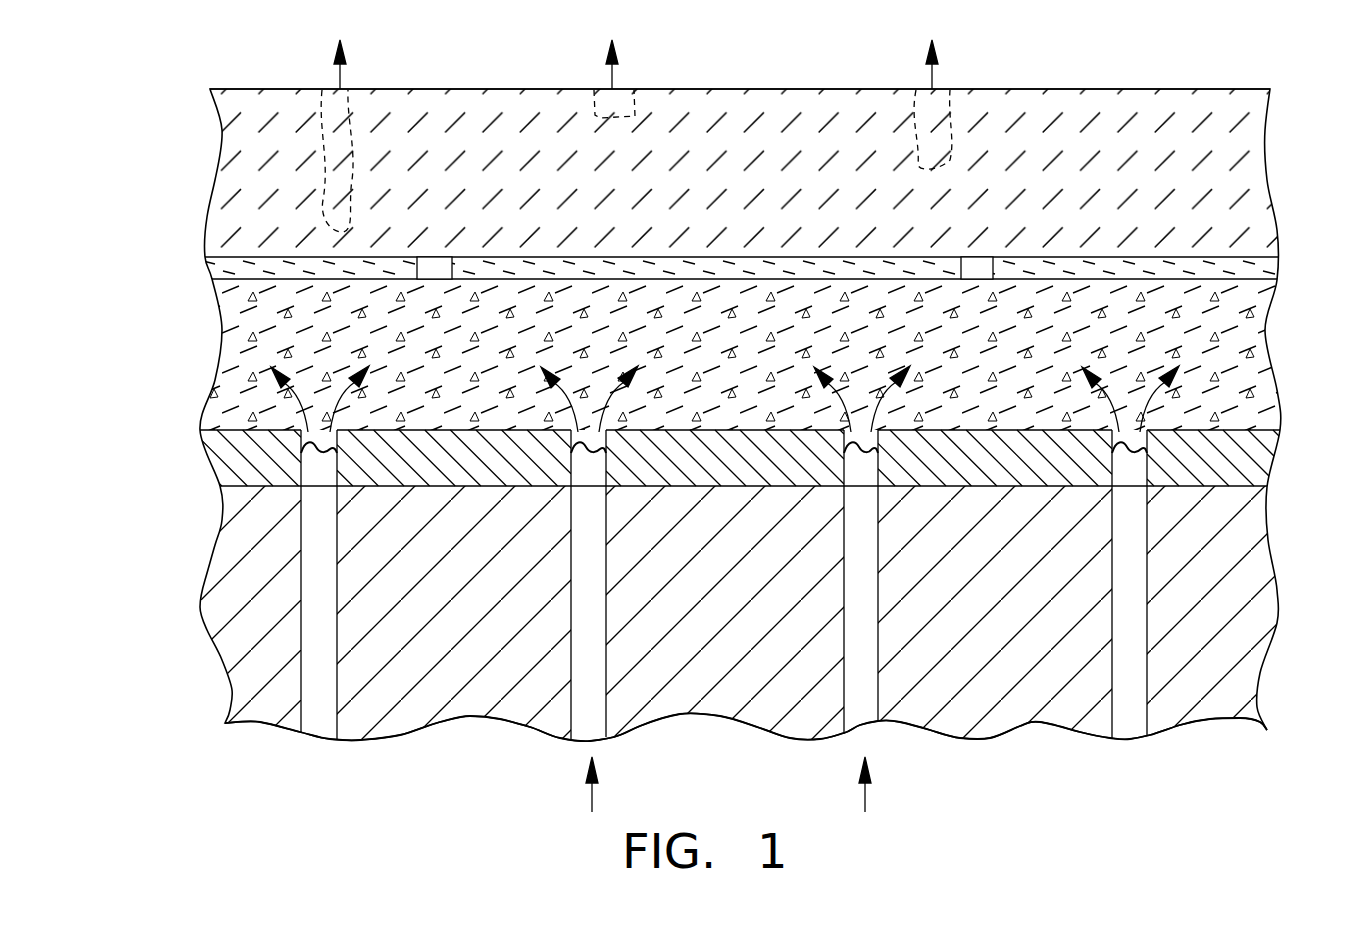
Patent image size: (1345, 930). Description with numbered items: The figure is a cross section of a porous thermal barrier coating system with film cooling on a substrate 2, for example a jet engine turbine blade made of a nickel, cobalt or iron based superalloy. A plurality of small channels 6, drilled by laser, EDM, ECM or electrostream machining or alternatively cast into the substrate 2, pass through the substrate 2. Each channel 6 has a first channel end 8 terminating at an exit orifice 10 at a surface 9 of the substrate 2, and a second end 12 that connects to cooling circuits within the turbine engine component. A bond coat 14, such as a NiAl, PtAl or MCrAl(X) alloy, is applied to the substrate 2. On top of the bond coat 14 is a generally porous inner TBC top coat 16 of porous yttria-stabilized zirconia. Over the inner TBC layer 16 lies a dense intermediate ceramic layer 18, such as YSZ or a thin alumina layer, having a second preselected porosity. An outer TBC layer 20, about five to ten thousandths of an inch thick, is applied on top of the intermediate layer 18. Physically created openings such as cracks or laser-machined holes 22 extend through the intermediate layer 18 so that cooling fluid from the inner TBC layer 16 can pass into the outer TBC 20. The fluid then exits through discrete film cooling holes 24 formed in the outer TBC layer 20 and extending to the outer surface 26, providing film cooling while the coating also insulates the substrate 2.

The substrate 2 is at (1243, 635).
The channel 6 is at (1143, 680).
The first channel end 8 is at (305, 497).
The surface 9 is at (1192, 487).
The exit orifice 10 is at (320, 486).
The second end 12 is at (318, 735).
The bond coat 14 is at (1243, 463).
The inner TBC top coat 16 is at (1253, 348).
The intermediate ceramic layer 18 is at (205, 270).
The outer TBC layer 20 is at (1240, 175).
The holes 22 is at (433, 257).
The film cooling holes 24 is at (923, 88).
The surface 26 is at (1066, 89).